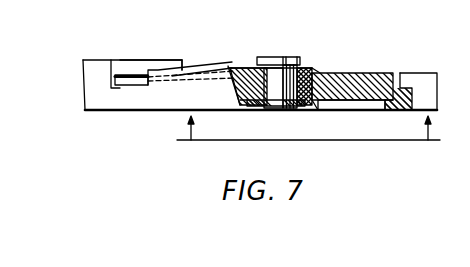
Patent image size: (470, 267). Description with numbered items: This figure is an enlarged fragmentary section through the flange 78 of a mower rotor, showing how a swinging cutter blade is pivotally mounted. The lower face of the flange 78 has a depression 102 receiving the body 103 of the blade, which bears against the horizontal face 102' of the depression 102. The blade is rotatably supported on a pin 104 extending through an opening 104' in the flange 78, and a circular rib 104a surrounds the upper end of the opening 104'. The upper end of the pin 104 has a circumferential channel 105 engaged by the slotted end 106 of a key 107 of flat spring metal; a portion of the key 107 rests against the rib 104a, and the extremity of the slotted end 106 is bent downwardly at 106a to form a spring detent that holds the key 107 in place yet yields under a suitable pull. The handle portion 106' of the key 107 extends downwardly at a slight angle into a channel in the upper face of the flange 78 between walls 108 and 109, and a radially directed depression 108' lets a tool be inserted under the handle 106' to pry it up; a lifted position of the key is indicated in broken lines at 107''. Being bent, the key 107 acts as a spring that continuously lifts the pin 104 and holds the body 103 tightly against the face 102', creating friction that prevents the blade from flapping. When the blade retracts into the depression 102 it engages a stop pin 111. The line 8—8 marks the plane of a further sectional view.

The flange 78 is at (133, 100).
The depression 102 is at (401, 79).
The horizontal face 102' is at (383, 111).
The body of the blade 103 is at (315, 92).
The pin 104 is at (247, 66).
The circular rib 104a is at (260, 62).
The opening 104' is at (305, 56).
The circumferential channel 105 is at (282, 100).
The slotted end 106 is at (291, 66).
The handle portion 106' is at (121, 56).
The downwardly bent portion 106a is at (323, 70).
The key 107 is at (194, 54).
The lever alternate position 107'' is at (176, 106).
The wall 108 is at (151, 35).
The radially directed depression 108' is at (79, 81).
The wall 109 is at (177, 73).
The stop pin 111 is at (315, 101).
The section line 8- 8 is at (308, 140).